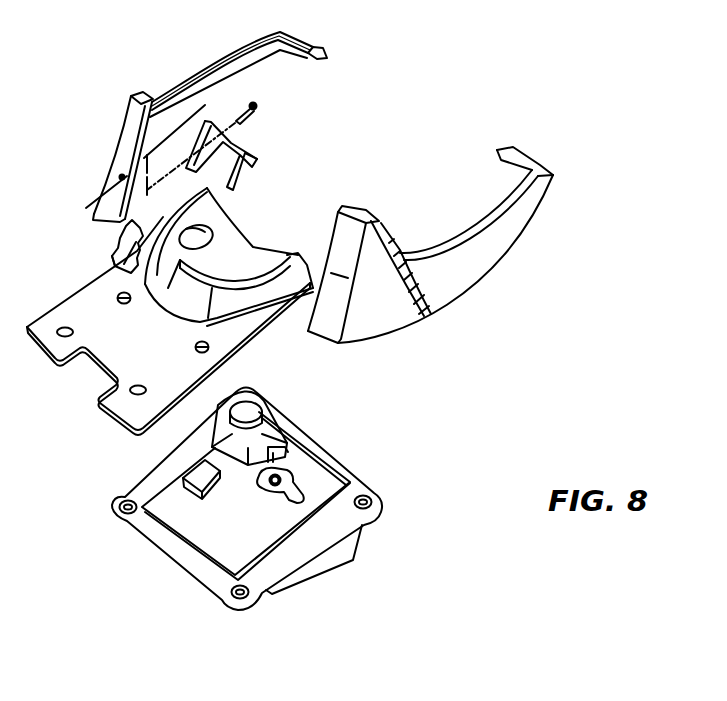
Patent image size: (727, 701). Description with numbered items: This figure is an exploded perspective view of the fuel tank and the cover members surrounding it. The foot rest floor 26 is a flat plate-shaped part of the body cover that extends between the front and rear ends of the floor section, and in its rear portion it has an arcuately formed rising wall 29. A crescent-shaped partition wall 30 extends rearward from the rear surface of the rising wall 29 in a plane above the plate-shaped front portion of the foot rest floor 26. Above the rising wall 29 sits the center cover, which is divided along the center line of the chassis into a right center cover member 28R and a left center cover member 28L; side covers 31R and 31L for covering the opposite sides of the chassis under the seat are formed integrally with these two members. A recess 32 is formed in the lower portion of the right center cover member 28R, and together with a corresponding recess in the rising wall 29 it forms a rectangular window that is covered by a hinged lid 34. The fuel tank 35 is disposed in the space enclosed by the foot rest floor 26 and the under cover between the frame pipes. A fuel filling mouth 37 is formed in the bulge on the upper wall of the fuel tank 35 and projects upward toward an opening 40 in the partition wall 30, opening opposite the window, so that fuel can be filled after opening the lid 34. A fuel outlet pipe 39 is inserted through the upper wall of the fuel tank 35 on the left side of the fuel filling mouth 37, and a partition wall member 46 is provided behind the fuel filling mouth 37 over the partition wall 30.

The foot rest floor 26 is at (88, 303).
The right center cover member 28R is at (128, 134).
The left center cover member 28L is at (384, 318).
The rising wall 29 is at (191, 301).
The partition wall 30 is at (246, 243).
The right side cover 31R is at (200, 100).
The left side cover 31L is at (466, 270).
The recess 32 is at (115, 246).
The lid 34 is at (112, 260).
The fuel tank 35 is at (170, 495).
The fuel filling mouth 37 is at (252, 403).
The fuel outlet pipe 39 is at (287, 450).
The opening 40 is at (212, 219).
The partition wall member 46 is at (244, 147).